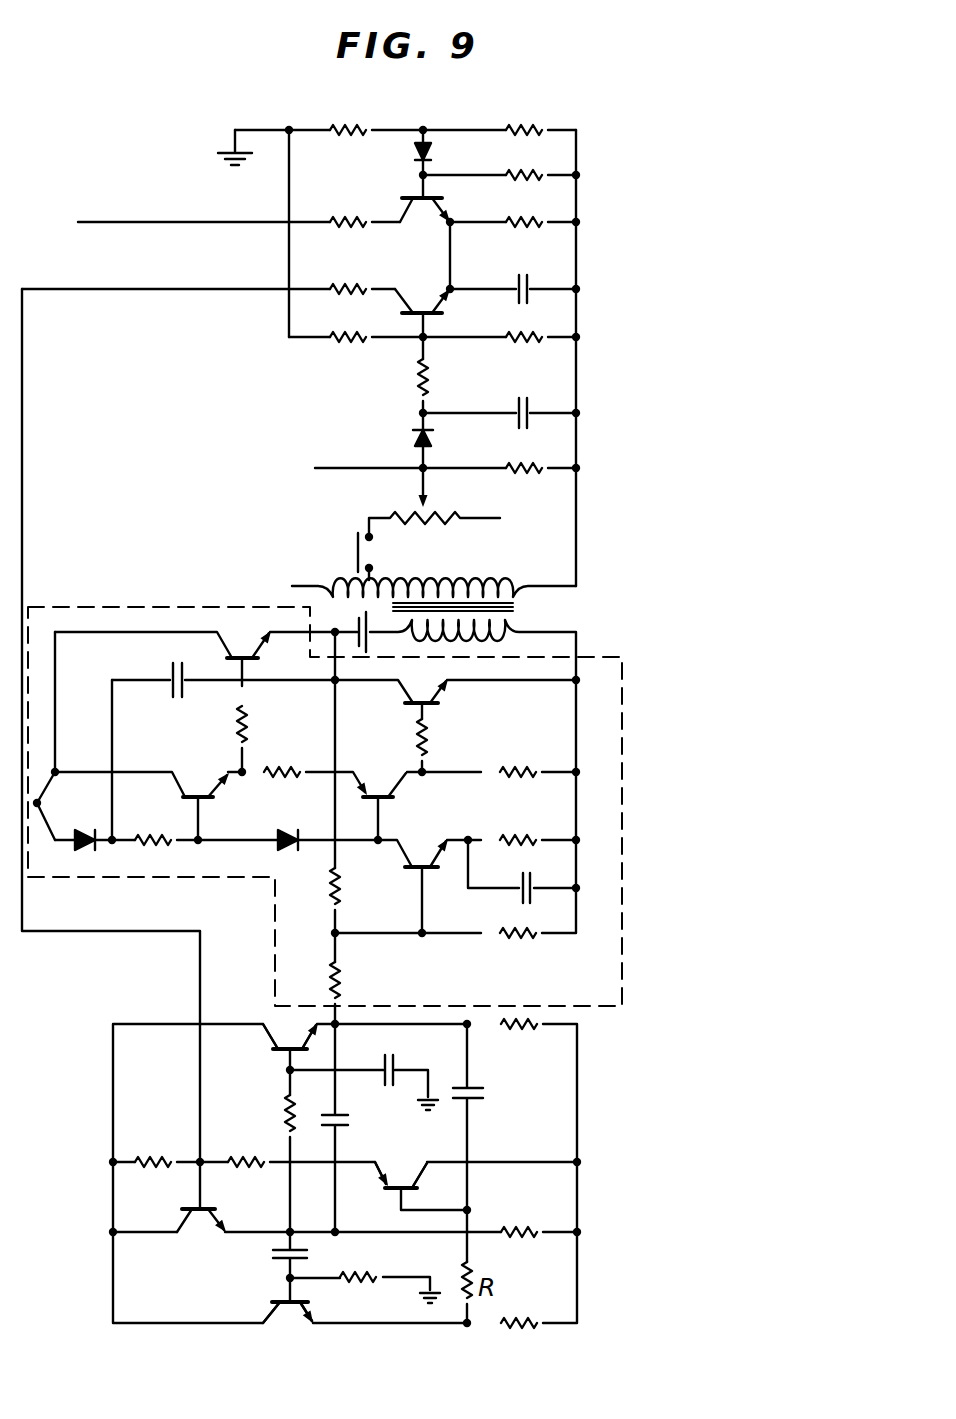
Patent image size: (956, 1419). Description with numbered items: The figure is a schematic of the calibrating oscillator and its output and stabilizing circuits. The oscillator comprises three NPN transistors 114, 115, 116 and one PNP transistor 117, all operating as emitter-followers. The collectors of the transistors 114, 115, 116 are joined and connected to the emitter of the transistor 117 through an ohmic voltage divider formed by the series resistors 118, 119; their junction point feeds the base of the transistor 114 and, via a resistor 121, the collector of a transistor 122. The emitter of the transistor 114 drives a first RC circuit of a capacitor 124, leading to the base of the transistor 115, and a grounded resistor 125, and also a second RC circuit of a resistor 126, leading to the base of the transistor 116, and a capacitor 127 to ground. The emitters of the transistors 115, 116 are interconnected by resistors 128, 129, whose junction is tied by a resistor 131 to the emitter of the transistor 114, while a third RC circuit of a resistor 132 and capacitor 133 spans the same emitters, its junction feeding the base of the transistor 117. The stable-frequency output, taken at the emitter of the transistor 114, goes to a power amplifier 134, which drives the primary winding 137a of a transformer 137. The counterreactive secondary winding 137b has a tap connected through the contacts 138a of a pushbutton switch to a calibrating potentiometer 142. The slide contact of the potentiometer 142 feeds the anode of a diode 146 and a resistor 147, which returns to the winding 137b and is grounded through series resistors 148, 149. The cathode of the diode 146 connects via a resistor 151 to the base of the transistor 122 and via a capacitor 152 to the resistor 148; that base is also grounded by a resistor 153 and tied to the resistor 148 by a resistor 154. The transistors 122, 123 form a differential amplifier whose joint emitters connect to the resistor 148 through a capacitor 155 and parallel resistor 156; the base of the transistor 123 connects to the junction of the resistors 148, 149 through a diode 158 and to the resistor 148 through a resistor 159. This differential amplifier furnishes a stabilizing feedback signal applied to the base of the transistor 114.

The resistor 149 is at (372, 108).
The resistor 148 is at (529, 130).
The diode 158 is at (411, 152).
The resistor 159 is at (536, 164).
The resistor 156 is at (536, 211).
The transistor 123 is at (417, 215).
The capacitor 155 is at (515, 275).
The transistor 122 is at (419, 290).
The resistor 121 is at (363, 298).
The resistor 154 is at (515, 329).
The resistor 153 is at (363, 346).
The resistor 151 is at (430, 380).
The capacitor 152 is at (538, 386).
The diode 146 is at (432, 440).
The resistor 147 is at (535, 452).
The calibrating potentiometer 142 is at (452, 507).
The contacts 138a is at (358, 520).
The transformer 137 is at (472, 608).
The secondary winding 137b is at (460, 562).
The primary winding 137a is at (508, 622).
The power amplifier 134 is at (636, 910).
The transistor 116 is at (287, 1035).
The resistor 126 is at (292, 1101).
The capacitor 127 is at (396, 1080).
The resistor 129 is at (521, 1031).
The capacitor 133 is at (480, 1100).
The PNP-type transistor 117 is at (402, 1180).
The resistor 118 is at (170, 1168).
The resistor 119 is at (266, 1168).
The transistor 114 is at (197, 1238).
The resistor 131 is at (538, 1212).
The capacitor 124 is at (280, 1262).
The resistor 132 is at (462, 1276).
The resistor 125 is at (365, 1279).
The resistor 128 is at (534, 1302).
The transistor 115 is at (283, 1317).